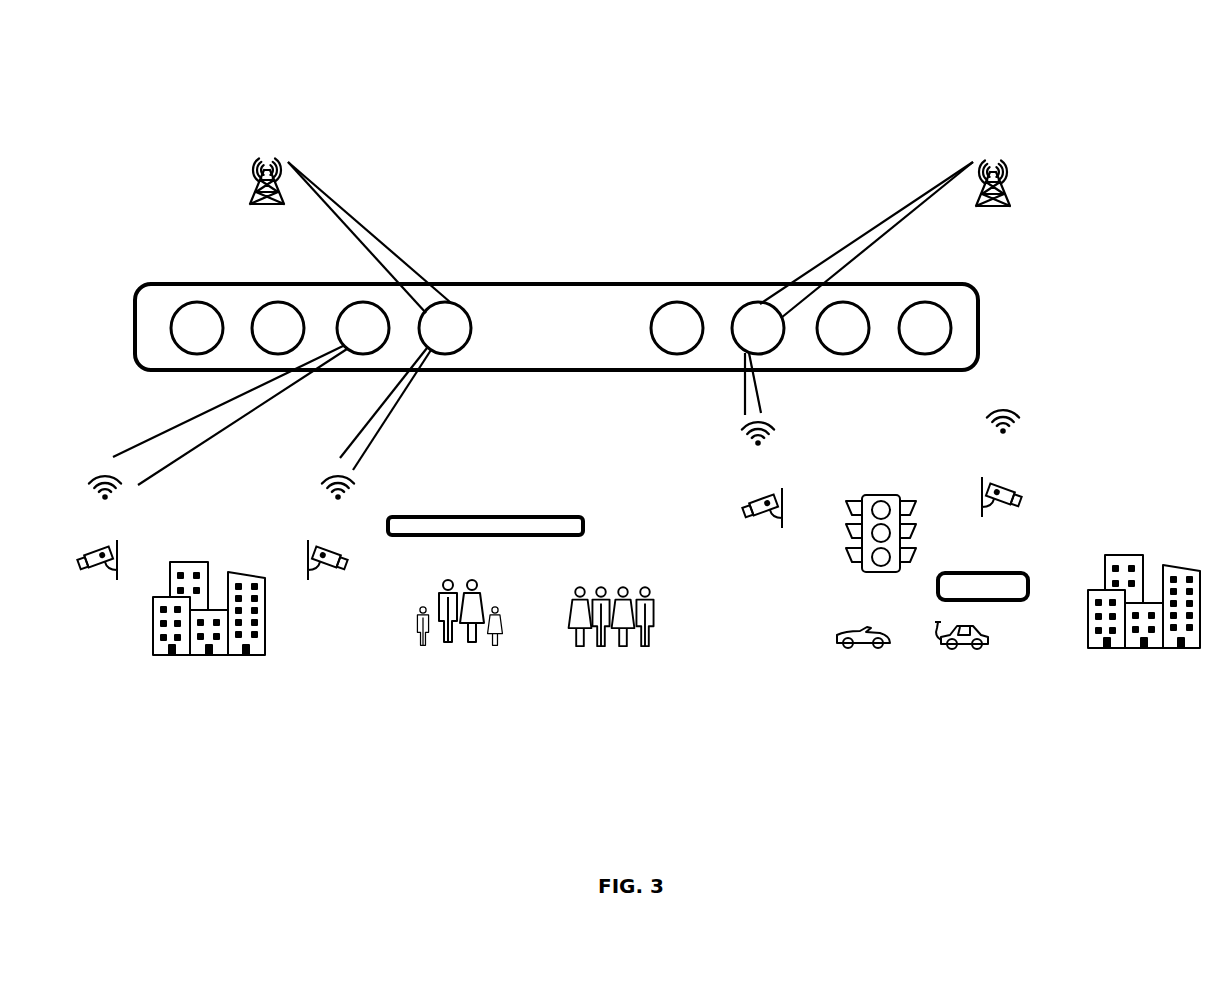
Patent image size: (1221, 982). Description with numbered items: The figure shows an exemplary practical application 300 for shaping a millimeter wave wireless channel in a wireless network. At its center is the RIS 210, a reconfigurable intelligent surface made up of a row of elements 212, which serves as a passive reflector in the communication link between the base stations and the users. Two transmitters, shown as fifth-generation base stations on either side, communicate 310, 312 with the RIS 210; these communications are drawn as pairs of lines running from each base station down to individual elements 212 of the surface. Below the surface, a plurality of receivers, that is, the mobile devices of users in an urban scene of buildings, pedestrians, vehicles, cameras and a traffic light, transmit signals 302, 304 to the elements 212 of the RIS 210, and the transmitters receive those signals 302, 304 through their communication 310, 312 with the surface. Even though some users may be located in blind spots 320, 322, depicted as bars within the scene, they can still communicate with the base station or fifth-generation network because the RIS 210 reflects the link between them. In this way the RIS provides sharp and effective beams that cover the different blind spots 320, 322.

The practical application 300 is at (688, 49).
The RIS 210 is at (597, 331).
The elements 212 is at (947, 332).
The communication 310 is at (943, 247).
The communication 312 is at (407, 214).
The signal 302 is at (295, 469).
The signal 304 is at (838, 427).
The blind spot 320 is at (482, 517).
The blind spot 322 is at (1013, 573).